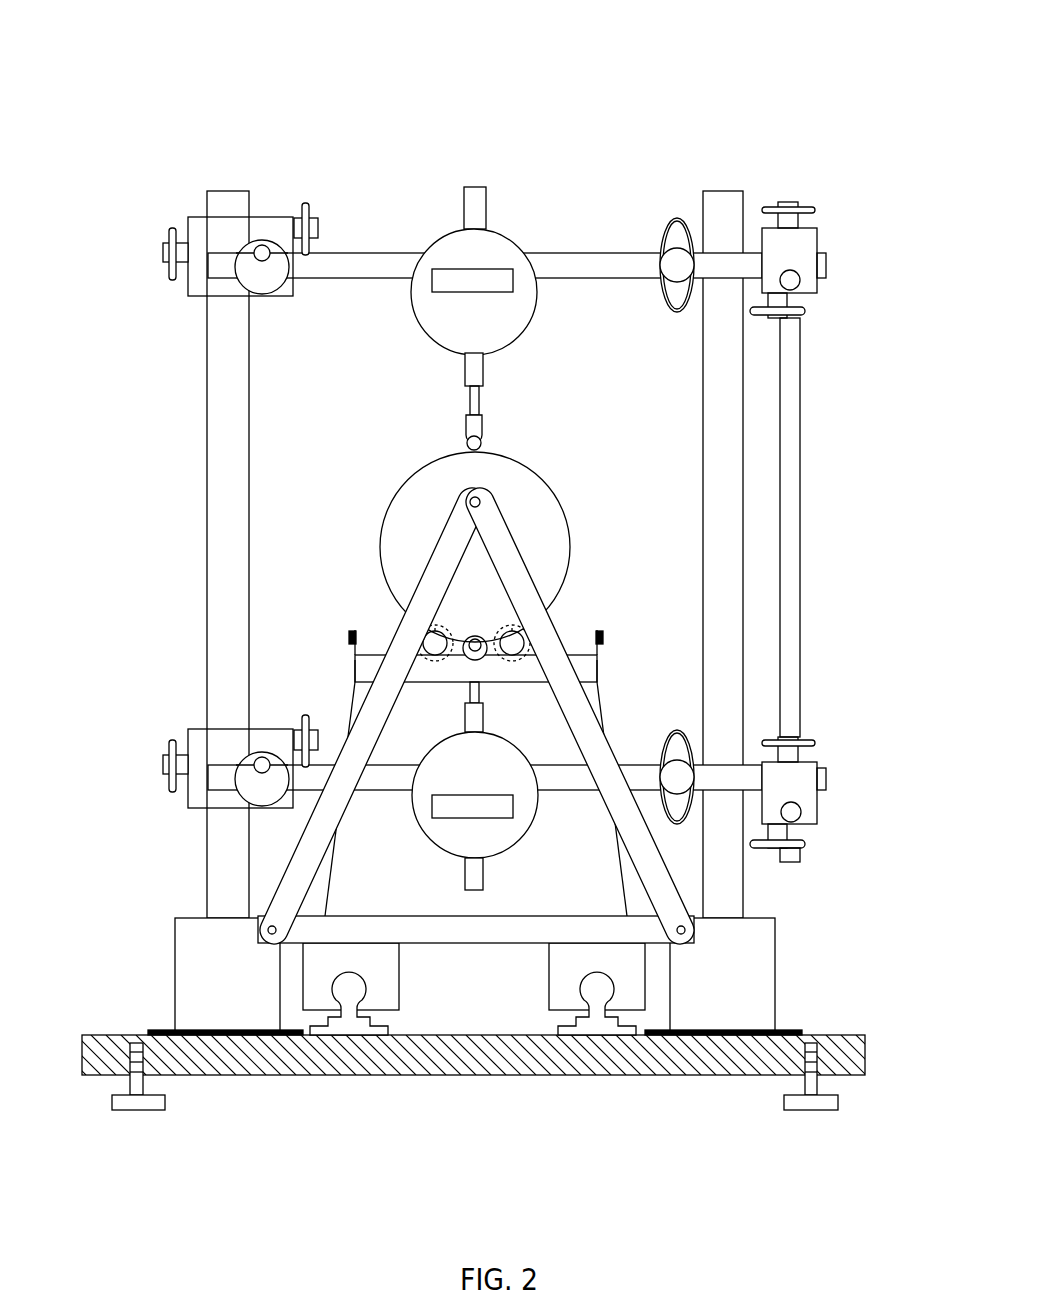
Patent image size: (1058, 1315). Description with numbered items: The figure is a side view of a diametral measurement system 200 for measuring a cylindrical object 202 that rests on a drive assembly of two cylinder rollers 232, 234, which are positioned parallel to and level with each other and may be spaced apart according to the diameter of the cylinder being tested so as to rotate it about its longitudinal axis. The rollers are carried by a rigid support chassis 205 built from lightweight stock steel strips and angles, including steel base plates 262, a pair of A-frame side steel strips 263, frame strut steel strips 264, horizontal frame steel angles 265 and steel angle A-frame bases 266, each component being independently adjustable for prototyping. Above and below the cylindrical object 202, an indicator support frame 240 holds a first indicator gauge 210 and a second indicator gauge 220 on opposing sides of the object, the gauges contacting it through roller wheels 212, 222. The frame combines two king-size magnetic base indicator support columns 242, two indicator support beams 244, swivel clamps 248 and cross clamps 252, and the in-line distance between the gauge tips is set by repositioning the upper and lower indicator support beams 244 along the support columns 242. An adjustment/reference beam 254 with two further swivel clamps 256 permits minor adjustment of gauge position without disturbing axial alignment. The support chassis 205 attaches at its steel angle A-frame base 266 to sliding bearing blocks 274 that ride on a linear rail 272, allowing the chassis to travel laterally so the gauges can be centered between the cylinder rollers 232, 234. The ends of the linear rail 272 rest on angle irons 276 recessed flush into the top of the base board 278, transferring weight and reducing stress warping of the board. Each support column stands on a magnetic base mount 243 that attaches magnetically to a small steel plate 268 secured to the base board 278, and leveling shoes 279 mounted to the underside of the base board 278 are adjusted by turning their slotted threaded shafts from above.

The diametral measurement system 200 is at (753, 67).
The cylindrical object 202 is at (532, 508).
The support chassis 205 is at (473, 726).
The first indicator gauge 210 is at (528, 227).
The roller wheel 212 is at (487, 437).
The second indicator gauge 220 is at (519, 860).
The roller wheel 222 is at (448, 652).
The cylinder roller 232 is at (427, 637).
The cylinder roller 234 is at (512, 652).
The indicator support frame 240 is at (185, 377).
The magnetic base indicator support column 242 is at (222, 500).
The magnetic base mount 243 is at (197, 957).
The indicator support beam 244 is at (345, 263).
The swivel clamp 248 is at (202, 232).
The cross clamp 252 is at (692, 243).
The adjustment/reference beam 254 is at (795, 557).
The swivel clamp 256 is at (807, 240).
The steel base plate 262 is at (375, 665).
The A-frame side steel strip 263 is at (538, 622).
The frame strut steel strip 264 is at (597, 700).
The horizontal frame steel angle 265 is at (575, 653).
The steel angle A-frame base 266 is at (445, 930).
The small steel plate 268 is at (148, 1028).
The linear rail 272 is at (353, 1027).
The sliding bearing block 274 is at (312, 955).
The angle iron 276 is at (480, 1072).
The base board 278 is at (485, 1053).
The leveling shoe 279 is at (832, 1108).